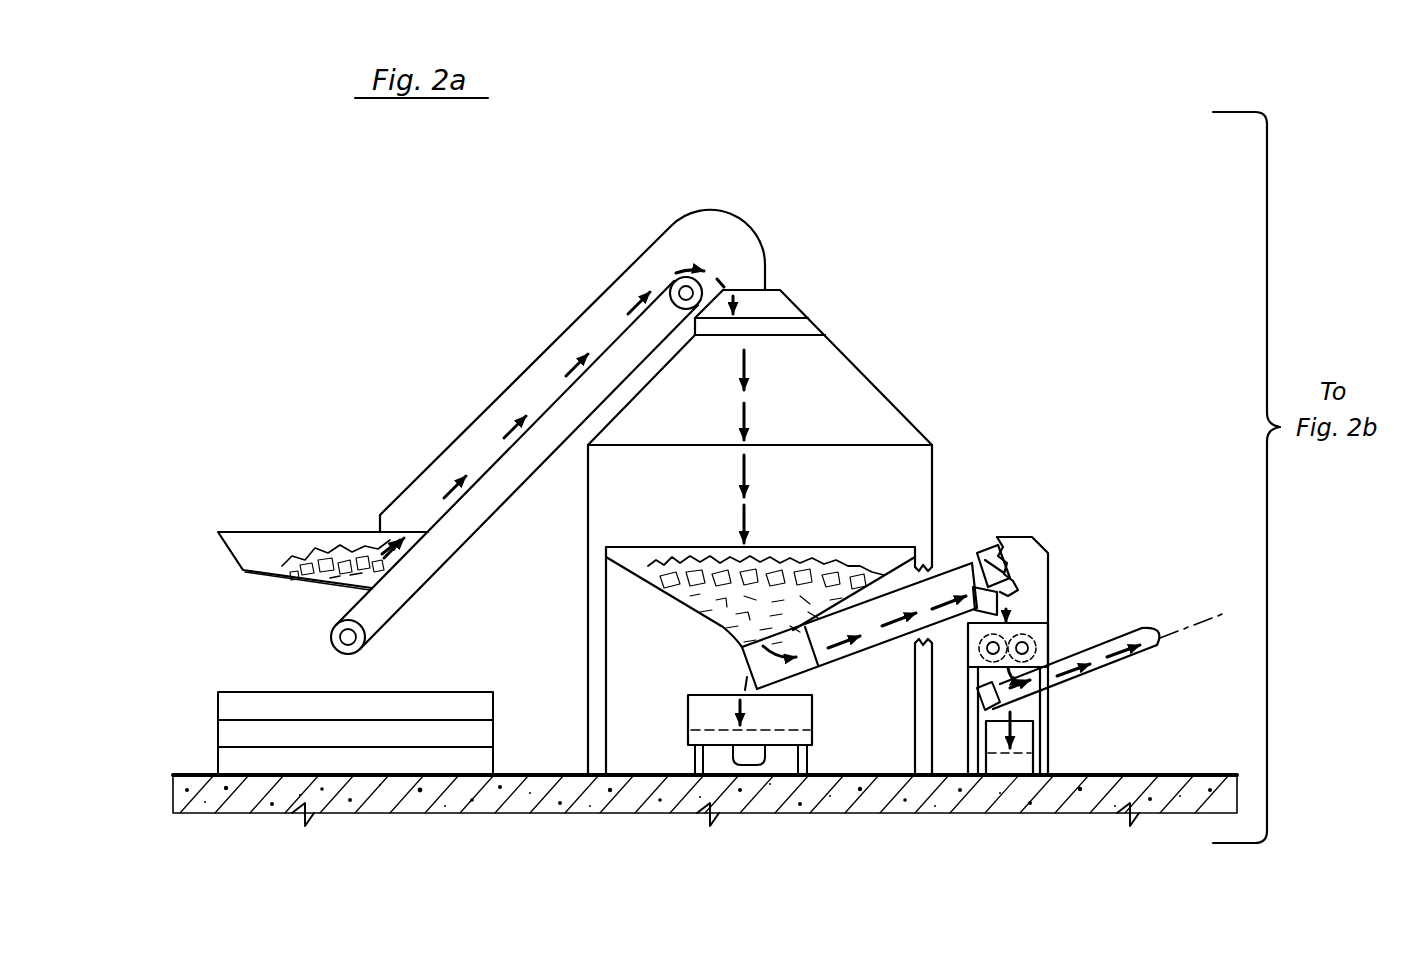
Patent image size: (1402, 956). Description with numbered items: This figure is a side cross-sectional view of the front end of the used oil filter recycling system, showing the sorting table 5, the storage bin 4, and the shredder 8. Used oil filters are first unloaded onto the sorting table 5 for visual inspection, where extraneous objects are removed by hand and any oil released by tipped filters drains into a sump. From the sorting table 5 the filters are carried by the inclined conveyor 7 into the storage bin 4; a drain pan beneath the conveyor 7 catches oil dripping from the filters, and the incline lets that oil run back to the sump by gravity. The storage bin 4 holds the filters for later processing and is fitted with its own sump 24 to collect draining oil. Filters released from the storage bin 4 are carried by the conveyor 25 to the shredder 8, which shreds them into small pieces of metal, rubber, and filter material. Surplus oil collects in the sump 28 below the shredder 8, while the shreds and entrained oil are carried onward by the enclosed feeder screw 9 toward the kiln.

The storage bin 4 is at (836, 501).
The sorting table 5 is at (276, 551).
The inclined conveyor 7 is at (543, 397).
The shredder 8 is at (1040, 635).
The feeder screw 9 is at (1100, 665).
The sump 24 is at (692, 710).
The conveyor 25 is at (871, 640).
The sump 28 is at (1023, 742).